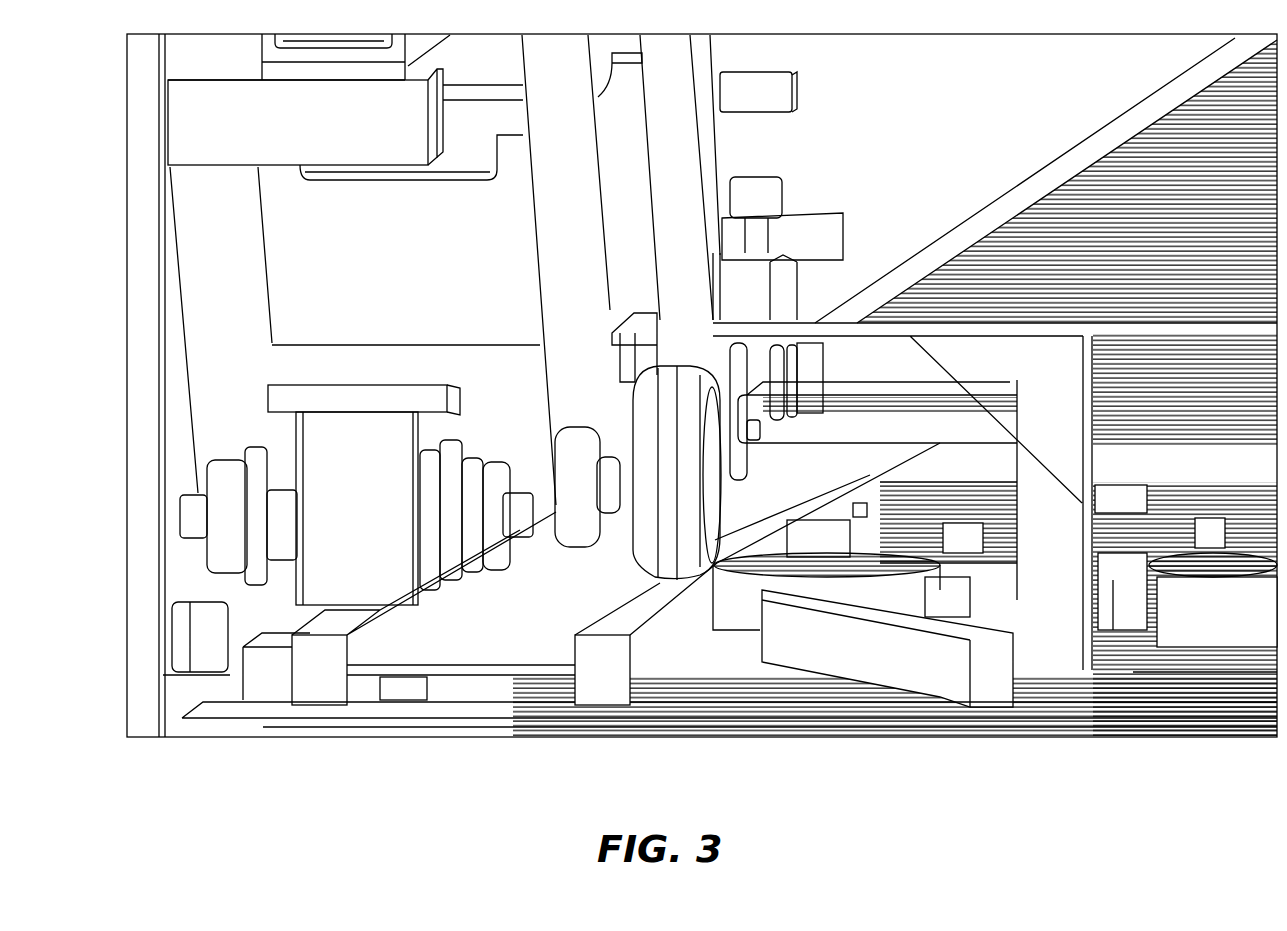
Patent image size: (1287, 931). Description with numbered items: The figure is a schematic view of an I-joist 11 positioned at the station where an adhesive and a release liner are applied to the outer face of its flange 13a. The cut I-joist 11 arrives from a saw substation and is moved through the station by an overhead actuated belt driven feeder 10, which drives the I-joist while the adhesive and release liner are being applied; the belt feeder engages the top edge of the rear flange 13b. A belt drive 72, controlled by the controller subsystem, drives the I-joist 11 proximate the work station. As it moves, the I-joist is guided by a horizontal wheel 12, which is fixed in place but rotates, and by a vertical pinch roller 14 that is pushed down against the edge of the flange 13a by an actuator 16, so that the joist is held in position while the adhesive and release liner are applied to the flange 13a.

The belt driven feeder 10 is at (512, 423).
The I-joist 11 is at (493, 646).
The horizontal wheel 12 is at (752, 622).
The flange 13a is at (645, 668).
The rear flange 13b is at (317, 683).
The vertical pinch roller 14 is at (665, 523).
The actuator 16 is at (758, 240).
The belt drive 72 is at (368, 533).